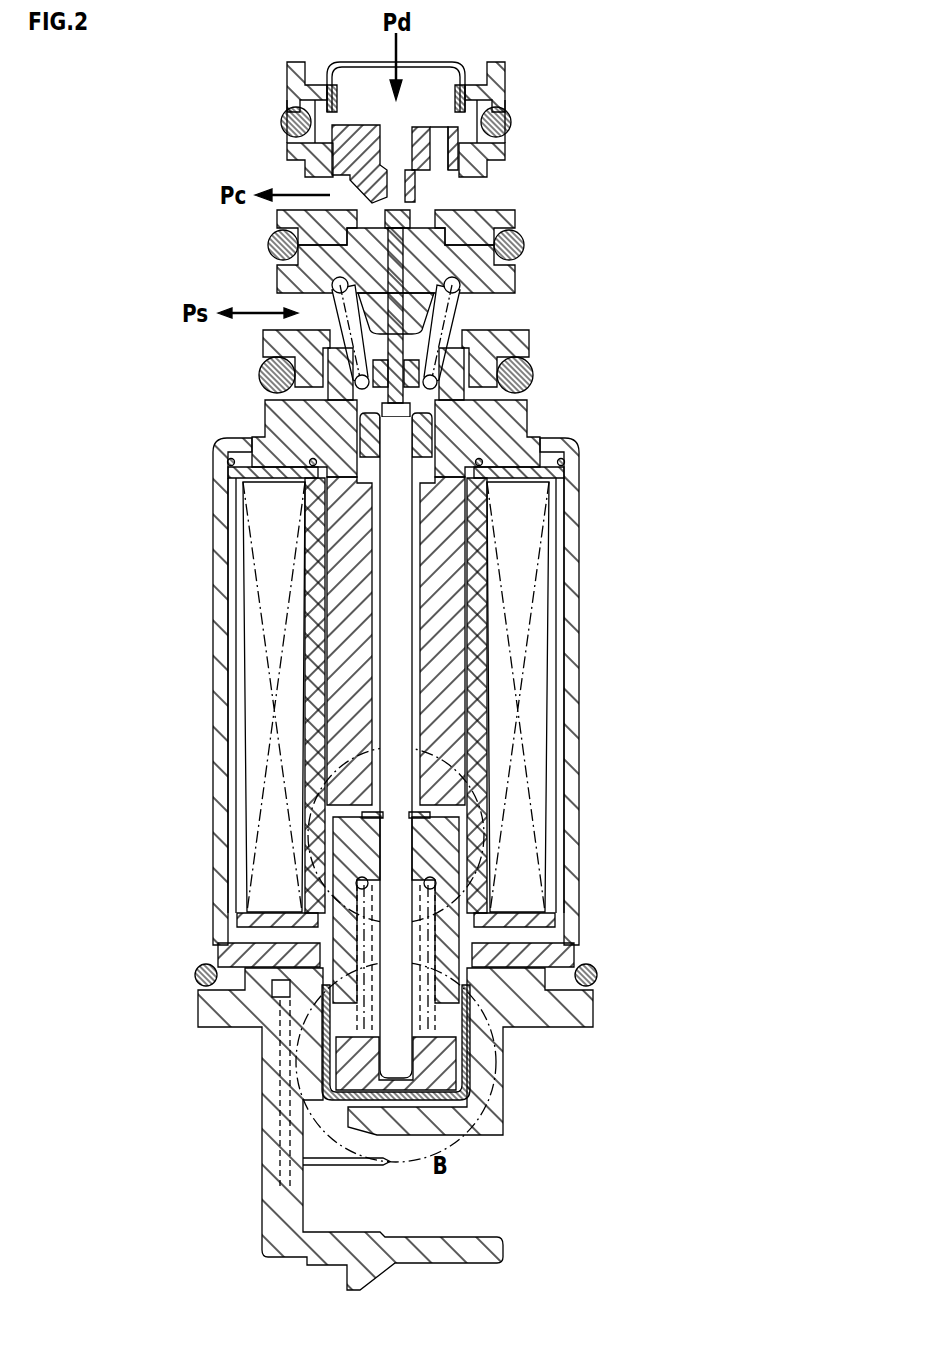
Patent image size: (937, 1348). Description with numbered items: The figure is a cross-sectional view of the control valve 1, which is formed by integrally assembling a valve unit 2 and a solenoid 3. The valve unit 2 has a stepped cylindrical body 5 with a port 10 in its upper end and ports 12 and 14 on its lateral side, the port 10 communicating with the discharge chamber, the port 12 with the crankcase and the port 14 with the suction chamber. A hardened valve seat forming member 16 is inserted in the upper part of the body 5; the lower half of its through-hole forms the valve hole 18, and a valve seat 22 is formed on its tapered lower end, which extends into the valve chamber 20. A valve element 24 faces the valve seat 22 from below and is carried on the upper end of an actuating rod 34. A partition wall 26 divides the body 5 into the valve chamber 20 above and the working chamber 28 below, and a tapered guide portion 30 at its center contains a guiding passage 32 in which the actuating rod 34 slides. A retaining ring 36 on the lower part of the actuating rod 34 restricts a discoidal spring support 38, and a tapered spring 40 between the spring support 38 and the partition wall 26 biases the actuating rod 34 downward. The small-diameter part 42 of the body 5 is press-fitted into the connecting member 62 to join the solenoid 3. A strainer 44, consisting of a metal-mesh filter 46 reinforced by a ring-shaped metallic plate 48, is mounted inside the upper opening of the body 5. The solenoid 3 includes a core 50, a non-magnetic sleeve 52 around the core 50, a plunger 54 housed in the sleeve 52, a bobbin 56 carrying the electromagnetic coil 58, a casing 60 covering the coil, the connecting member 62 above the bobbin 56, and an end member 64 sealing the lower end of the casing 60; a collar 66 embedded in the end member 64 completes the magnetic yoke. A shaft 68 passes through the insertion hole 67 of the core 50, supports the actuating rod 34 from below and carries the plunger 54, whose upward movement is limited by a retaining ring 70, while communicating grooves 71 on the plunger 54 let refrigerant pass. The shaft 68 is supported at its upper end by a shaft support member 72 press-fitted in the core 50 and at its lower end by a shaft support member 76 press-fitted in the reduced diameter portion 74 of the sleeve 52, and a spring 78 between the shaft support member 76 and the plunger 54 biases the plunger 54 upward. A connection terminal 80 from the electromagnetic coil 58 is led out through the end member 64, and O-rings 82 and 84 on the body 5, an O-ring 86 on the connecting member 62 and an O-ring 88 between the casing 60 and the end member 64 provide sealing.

The control valve 1 is at (527, 87).
The valve unit 2 is at (517, 145).
The solenoid 3 is at (468, 674).
The body 5 is at (463, 285).
The port 10 is at (372, 78).
The port 12 is at (308, 188).
The port 14 is at (302, 307).
The valve seat forming member 16 is at (333, 153).
The valve hole 18 is at (410, 177).
The valve chamber 20 is at (357, 222).
The valve seat 22 is at (410, 205).
The valve element 24 is at (410, 216).
The partition wall 26 is at (517, 247).
The working chamber 28 is at (362, 323).
The guide portion 30 is at (433, 308).
The guiding passage 32 is at (367, 265).
The actuating rod 34 is at (400, 283).
The retaining ring 36 is at (385, 382).
The spring support 38 is at (447, 370).
The spring 40 is at (463, 330).
The small-diameter part 42 is at (312, 362).
The strainer 44 is at (327, 96).
The filter 46 is at (427, 62).
The metallic plate 48 is at (315, 100).
The core 50 is at (480, 540).
The sleeve 52 is at (318, 675).
The plunger 54 is at (460, 870).
The bobbin 56 is at (307, 567).
The electromagnetic coil 58 is at (248, 617).
The casing 60 is at (213, 498).
The connecting member 62 is at (263, 420).
The end member 64 is at (257, 1098).
The collar 66 is at (213, 950).
The insertion hole 67 is at (420, 602).
The shaft 68 is at (415, 675).
The retaining ring 70 is at (445, 805).
The communicating grooves 71 is at (477, 900).
The shaft support member 72 is at (427, 433).
The reduced diameter portion 74 is at (325, 1055).
The shaft support member 76 is at (457, 1057).
The spring 78 is at (540, 942).
The connection terminals 80 is at (385, 1163).
The O-ring 82 is at (281, 120).
The O-ring 84 is at (270, 245).
The O-ring 86 is at (290, 363).
The O-ring 88 is at (193, 980).